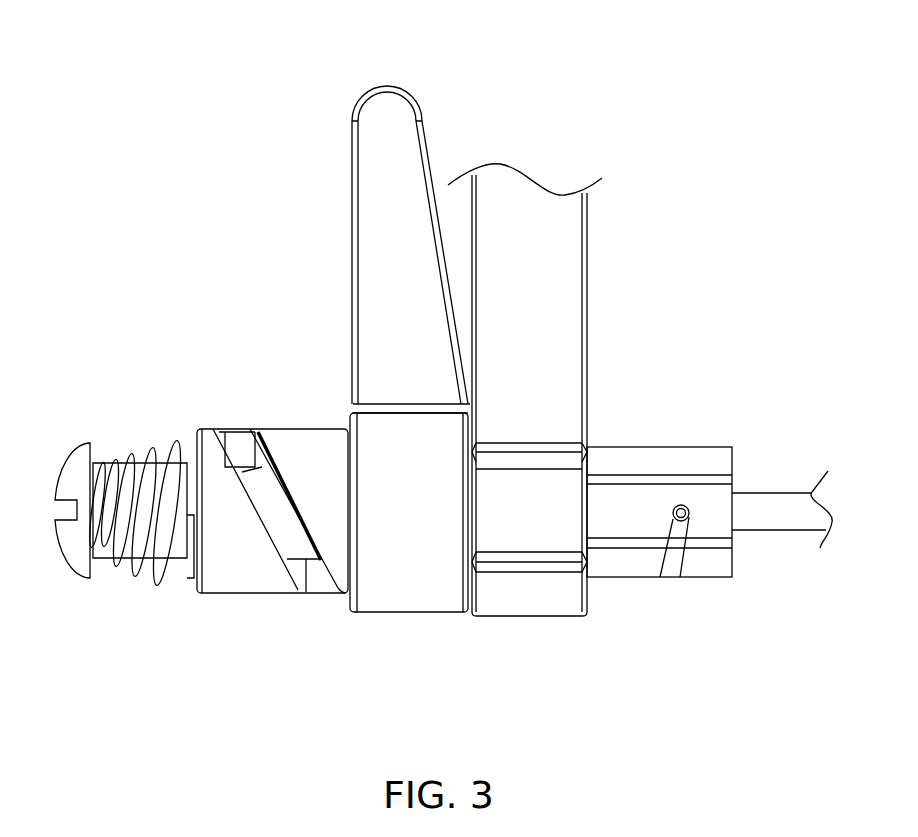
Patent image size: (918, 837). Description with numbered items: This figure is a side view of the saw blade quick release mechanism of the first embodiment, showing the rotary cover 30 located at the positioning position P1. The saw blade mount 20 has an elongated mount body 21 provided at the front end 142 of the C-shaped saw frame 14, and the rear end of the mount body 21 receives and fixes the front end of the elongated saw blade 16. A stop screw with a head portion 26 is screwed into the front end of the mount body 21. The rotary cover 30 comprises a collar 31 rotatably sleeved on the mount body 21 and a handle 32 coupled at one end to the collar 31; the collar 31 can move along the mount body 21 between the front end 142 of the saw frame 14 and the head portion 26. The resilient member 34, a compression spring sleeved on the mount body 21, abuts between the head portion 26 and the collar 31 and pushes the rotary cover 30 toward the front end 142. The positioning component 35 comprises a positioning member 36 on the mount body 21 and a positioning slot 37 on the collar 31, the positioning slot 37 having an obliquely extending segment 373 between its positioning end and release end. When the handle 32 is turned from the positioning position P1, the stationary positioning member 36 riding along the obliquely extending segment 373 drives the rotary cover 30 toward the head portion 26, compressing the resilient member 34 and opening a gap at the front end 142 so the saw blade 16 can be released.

The positioning position P1 is at (455, 97).
The rotary cover 30 is at (277, 162).
The collar 31 is at (323, 440).
The handle 32 is at (395, 233).
The positioning component 35 is at (268, 305).
The positioning member 36 is at (234, 440).
The positioning slot 37 is at (284, 455).
The obliquely extending segment 373 is at (272, 530).
The head portion 26 is at (75, 542).
The resilient member 34 is at (137, 543).
The saw frame 14 is at (592, 256).
The front end 142 is at (520, 532).
The saw blade mount 20 is at (716, 427).
The mount body 21 is at (617, 522).
The saw blade 16 is at (780, 515).